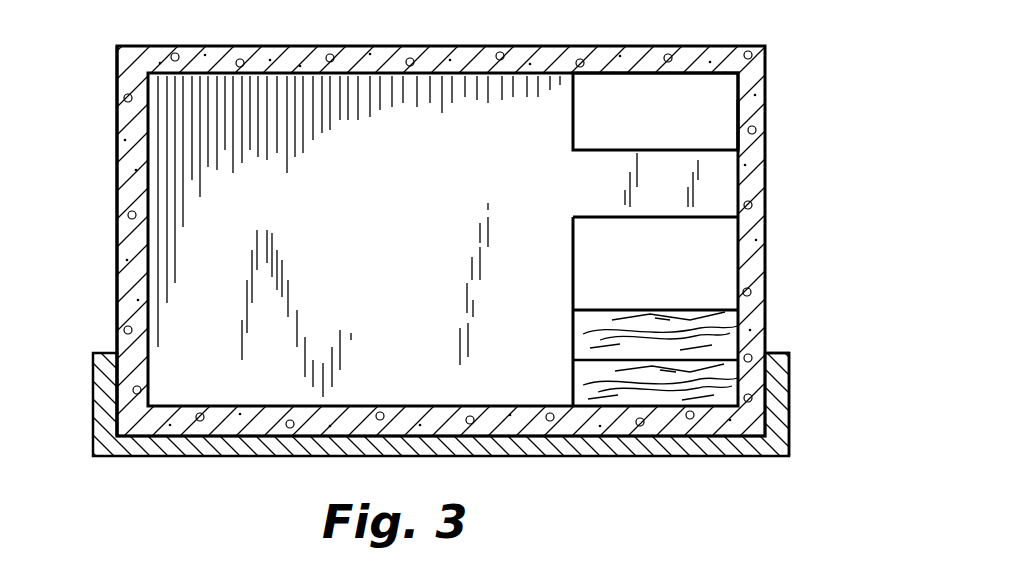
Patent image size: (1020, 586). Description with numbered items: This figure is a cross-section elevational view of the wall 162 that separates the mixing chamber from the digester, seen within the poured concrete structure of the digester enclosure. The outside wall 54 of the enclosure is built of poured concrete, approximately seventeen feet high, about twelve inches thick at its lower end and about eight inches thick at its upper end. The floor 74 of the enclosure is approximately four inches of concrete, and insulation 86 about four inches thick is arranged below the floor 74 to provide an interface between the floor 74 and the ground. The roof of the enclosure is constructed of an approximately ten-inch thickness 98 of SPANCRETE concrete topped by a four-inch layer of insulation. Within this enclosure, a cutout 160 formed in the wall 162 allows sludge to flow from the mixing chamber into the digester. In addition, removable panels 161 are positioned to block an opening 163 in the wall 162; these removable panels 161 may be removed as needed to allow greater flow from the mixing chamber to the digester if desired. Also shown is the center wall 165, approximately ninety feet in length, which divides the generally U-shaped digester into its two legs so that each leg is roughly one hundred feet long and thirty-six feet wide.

The outside wall 54 is at (130, 138).
The floor 74 is at (673, 412).
The insulation 86 is at (788, 381).
The ten-inch thickness of SPANCRETE concrete 98 is at (706, 52).
The cutout 160 is at (638, 90).
The removable panels 161 is at (726, 370).
The wall 162 is at (386, 174).
The opening 163 is at (710, 235).
The center wall 165 is at (758, 128).